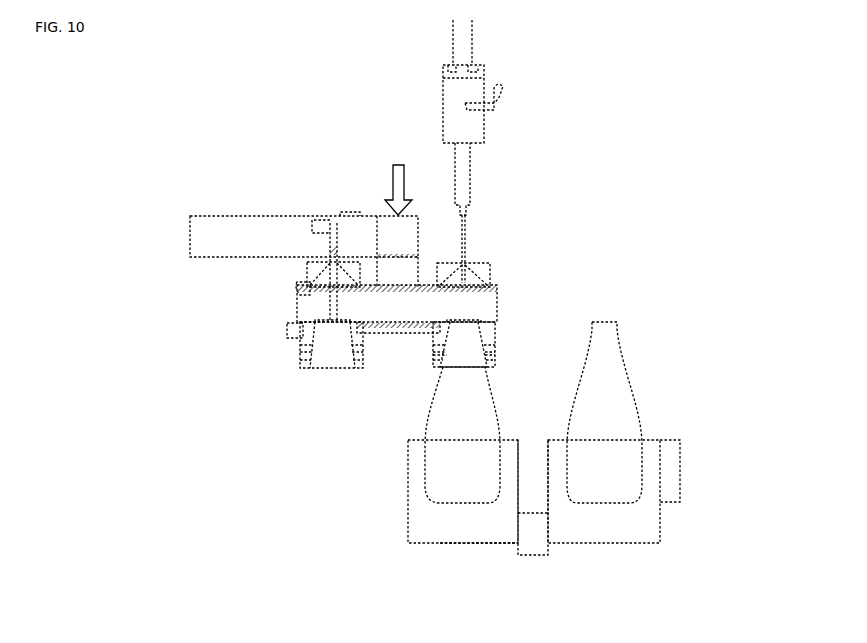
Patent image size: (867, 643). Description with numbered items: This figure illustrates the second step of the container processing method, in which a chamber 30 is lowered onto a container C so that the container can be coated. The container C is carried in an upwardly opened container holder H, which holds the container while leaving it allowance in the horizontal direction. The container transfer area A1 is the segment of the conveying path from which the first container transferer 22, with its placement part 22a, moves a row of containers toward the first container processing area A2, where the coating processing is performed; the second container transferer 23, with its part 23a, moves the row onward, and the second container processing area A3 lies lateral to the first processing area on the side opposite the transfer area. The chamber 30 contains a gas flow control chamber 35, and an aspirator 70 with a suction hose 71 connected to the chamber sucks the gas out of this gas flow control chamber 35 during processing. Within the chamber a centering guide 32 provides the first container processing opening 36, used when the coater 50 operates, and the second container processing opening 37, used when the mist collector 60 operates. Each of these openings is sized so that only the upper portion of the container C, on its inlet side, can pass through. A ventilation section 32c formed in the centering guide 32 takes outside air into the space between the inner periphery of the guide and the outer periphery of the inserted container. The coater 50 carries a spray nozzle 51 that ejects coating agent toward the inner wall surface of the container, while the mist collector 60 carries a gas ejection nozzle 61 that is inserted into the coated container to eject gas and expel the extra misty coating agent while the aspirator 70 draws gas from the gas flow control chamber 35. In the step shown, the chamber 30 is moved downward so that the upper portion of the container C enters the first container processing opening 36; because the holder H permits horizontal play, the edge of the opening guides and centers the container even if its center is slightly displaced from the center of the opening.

The suction hose 71 is at (218, 227).
The aspirator 70 is at (299, 225).
The gas ejection nozzle 61 is at (330, 308).
The mist collector 60 is at (268, 275).
The spray nozzle 51 is at (465, 283).
The coater 50 is at (521, 153).
The chamber 30 is at (502, 290).
The gas flow control chamber 35 is at (410, 316).
The centering guide 32 is at (490, 335).
The ventilation section 32c is at (492, 353).
The second container processing opening 37 is at (325, 355).
The first container processing opening 36 is at (447, 363).
The placement table 22a is at (673, 472).
The first container transferer 22 is at (730, 471).
The partition 23a is at (538, 547).
The second container transferer 23 is at (551, 528).
The container transfer area A1 is at (637, 515).
The first container processing area A2 is at (422, 500).
The second container processing area A3 is at (347, 496).
The container C is at (462, 488).
The container holder H is at (470, 533).